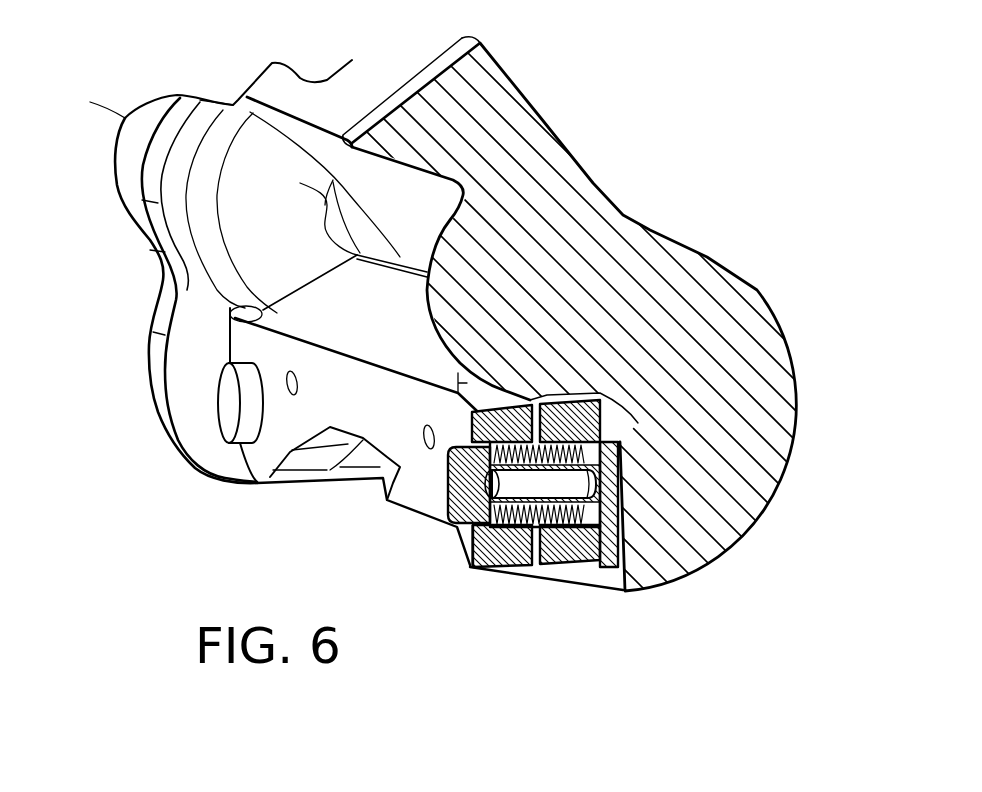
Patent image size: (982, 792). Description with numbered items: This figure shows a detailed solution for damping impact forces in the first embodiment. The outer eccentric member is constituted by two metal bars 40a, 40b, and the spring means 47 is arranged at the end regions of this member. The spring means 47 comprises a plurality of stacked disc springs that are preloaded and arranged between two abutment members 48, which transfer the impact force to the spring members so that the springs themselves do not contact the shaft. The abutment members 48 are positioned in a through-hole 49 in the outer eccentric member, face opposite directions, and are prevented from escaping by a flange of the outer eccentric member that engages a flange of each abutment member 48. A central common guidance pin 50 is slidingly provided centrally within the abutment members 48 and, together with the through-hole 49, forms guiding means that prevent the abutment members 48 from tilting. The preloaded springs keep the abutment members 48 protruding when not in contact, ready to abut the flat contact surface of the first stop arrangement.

The metal bar 40a is at (588, 565).
The metal bar 40b is at (512, 567).
The spring means 47 is at (468, 567).
The abutment members 48 is at (237, 425).
The through-hole 49 is at (600, 443).
The central common guidance pin 50 is at (598, 480).